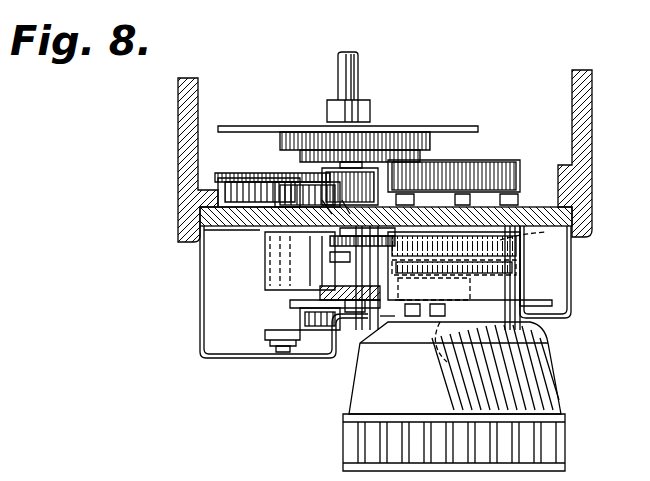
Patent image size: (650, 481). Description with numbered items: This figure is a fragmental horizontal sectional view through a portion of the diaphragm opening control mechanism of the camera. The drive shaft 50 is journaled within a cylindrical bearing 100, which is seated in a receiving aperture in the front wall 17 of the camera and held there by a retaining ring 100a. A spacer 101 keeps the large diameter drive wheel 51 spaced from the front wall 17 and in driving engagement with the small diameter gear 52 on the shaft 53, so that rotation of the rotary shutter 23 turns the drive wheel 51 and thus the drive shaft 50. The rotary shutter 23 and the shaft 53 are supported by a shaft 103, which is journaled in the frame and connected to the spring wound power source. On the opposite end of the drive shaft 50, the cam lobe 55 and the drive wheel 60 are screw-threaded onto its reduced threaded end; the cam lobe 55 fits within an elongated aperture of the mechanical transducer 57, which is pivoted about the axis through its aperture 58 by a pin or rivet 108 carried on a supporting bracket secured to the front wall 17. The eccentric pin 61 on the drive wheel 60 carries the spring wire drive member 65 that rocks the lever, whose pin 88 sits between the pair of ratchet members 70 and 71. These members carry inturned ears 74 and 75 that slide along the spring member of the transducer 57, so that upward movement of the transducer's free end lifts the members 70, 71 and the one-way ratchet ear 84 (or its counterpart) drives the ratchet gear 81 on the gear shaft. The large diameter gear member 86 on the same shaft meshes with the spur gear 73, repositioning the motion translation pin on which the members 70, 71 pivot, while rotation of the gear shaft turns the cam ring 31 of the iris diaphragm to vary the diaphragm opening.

The front wall 17 is at (200, 210).
The rotary shutter 23 is at (480, 128).
The cam ring 31 is at (512, 166).
The drive shaft 50 is at (270, 263).
The large diameter gear 51 is at (240, 173).
The small diameter gear 52 is at (310, 206).
The shaft 53 is at (336, 168).
The cam lobe 55 is at (340, 262).
The mechanical transducer 57 is at (570, 290).
The aperture 58 is at (366, 312).
The drive wheel 60 is at (292, 322).
The pin 61 is at (268, 342).
The resilient drive member 65 is at (298, 350).
The ratchet member 70 is at (414, 300).
The ratchet member 71 is at (545, 304).
The large diameter spur gear 73 is at (356, 246).
The inturned ear 74 is at (448, 347).
The inturned ear 75 is at (480, 340).
The ratchet gear 81 is at (560, 250).
The one way ratchet ear 84 is at (490, 266).
The large diameter gear member 86 is at (518, 240).
The pin 88 is at (350, 286).
The cylindrical bearing 100 is at (266, 284).
The retaining ring 100a is at (258, 232).
The spacer 101 is at (250, 195).
The shaft 103 is at (360, 80).
The pin or rivet 108 is at (366, 316).